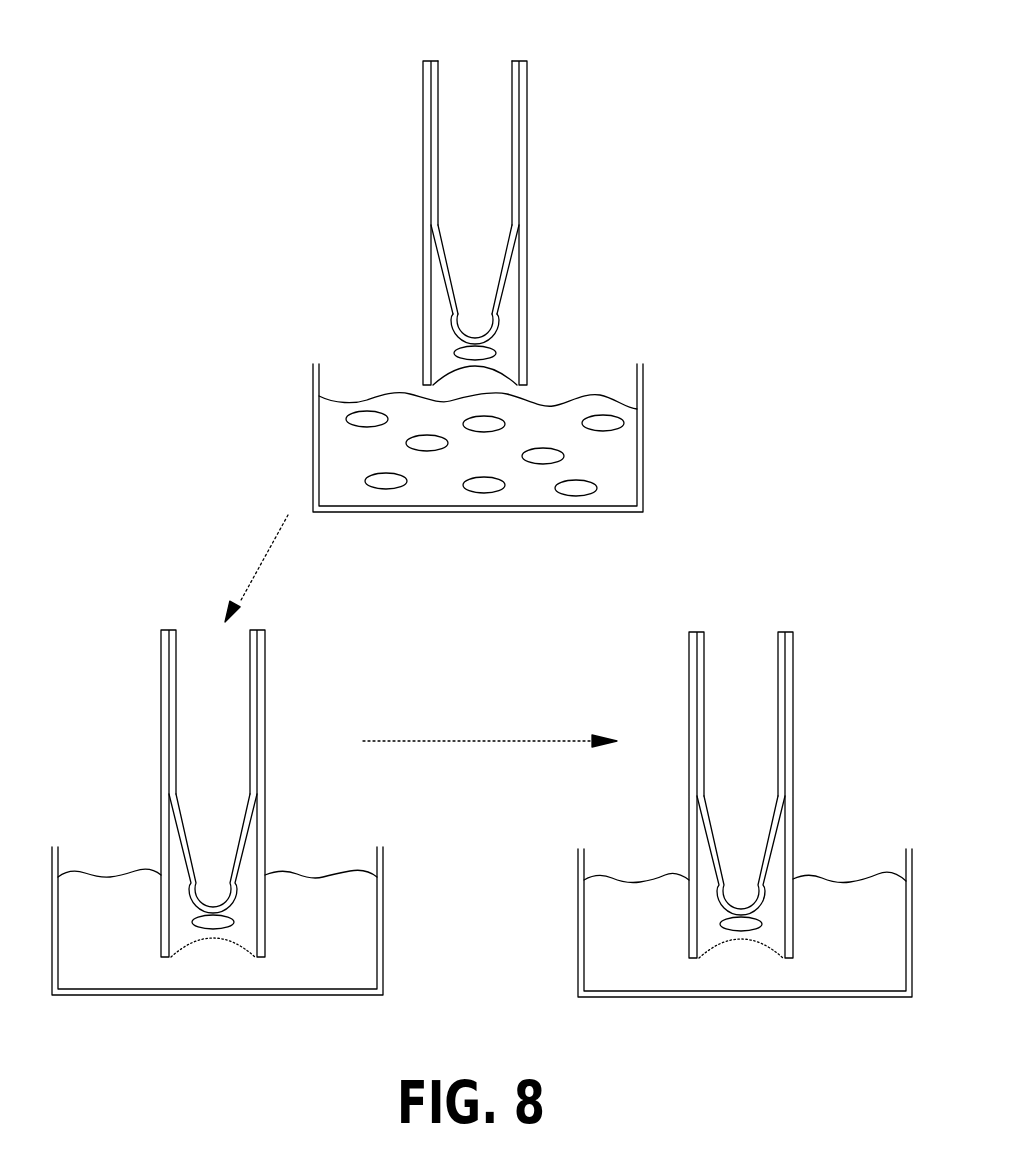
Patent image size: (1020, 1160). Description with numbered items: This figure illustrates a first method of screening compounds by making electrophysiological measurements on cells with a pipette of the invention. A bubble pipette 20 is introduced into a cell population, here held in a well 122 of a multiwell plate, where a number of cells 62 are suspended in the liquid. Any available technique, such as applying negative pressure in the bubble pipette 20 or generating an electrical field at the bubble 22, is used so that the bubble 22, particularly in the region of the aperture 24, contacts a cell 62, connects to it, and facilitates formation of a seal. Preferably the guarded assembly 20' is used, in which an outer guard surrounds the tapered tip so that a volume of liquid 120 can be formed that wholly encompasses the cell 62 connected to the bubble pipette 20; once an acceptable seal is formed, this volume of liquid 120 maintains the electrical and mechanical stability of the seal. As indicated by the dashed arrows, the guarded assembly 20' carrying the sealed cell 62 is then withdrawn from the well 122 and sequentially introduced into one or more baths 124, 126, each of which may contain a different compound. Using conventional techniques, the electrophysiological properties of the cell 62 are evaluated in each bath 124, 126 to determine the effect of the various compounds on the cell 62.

The bubble pipette 20 is at (475, 195).
The guarded assembly 20' is at (419, 509).
The bubble 22 is at (453, 321).
The aperture 24 is at (500, 334).
The cell 62 is at (457, 356).
The volume of liquid 120 is at (510, 290).
The well 122 is at (643, 435).
The bath 124 is at (383, 923).
The bath 126 is at (578, 926).